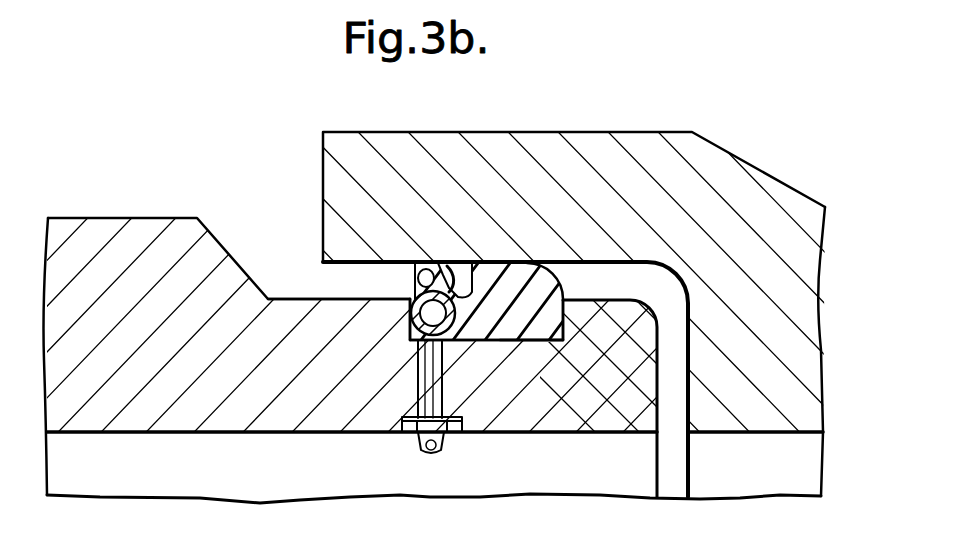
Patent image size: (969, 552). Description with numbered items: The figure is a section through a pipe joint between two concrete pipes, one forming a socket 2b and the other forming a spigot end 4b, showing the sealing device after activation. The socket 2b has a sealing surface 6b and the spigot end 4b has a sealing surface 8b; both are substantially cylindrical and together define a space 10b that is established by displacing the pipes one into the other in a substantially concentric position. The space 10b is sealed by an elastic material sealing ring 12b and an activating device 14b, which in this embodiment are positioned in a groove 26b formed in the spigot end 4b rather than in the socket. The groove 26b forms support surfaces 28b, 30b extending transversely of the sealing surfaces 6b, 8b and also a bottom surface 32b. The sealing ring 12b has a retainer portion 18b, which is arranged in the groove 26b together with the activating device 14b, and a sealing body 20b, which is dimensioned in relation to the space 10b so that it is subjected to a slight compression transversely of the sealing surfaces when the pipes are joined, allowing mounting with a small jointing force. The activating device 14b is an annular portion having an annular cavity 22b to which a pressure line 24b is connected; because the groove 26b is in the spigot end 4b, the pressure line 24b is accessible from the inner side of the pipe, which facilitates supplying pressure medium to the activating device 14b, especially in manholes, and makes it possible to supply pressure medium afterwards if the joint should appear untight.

The socket 2b is at (700, 160).
The spigot end 4b is at (108, 243).
The sealing surface 6b is at (347, 288).
The sealing surface 8b is at (346, 266).
The space 10b is at (413, 284).
The sealing ring 12b is at (519, 300).
The activating device 14b is at (408, 313).
The retainer portion 18b is at (483, 341).
The sealing body 20b is at (470, 275).
The annular cavity 22b is at (406, 434).
The pressure line 24b is at (419, 436).
The groove 26b is at (558, 343).
The support surface 28b is at (556, 314).
The support surface 30b is at (410, 343).
The bottom surface 32b is at (528, 341).